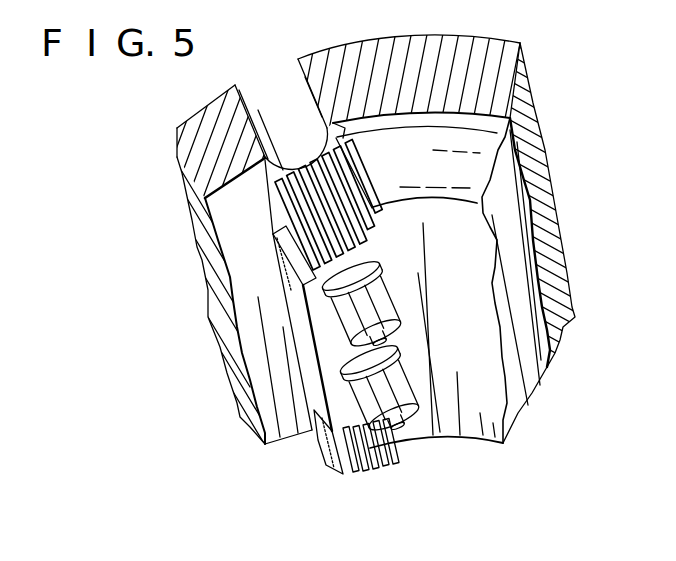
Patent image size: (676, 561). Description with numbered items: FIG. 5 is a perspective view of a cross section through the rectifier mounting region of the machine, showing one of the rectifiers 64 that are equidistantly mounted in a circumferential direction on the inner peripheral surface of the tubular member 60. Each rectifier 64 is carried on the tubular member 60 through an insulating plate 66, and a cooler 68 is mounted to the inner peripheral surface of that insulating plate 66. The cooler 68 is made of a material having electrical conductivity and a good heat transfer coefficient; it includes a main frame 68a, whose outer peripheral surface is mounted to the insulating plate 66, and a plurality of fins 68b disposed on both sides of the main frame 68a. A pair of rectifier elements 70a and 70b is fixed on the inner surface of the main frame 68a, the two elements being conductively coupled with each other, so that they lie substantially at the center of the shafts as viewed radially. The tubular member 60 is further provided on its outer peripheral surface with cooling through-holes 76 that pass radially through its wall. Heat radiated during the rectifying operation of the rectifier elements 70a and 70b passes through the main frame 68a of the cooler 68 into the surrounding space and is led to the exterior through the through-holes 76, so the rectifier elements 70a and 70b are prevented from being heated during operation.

The tubular member 60 is at (474, 38).
The rectifier 64 is at (298, 342).
The insulating plate 66 is at (524, 168).
The cooler 68 is at (288, 292).
The main frame 68a is at (452, 438).
The fins 68b is at (288, 206).
The rectifier element 70a is at (405, 388).
The rectifier element 70b is at (392, 297).
The cooling through-hole 76 is at (274, 113).